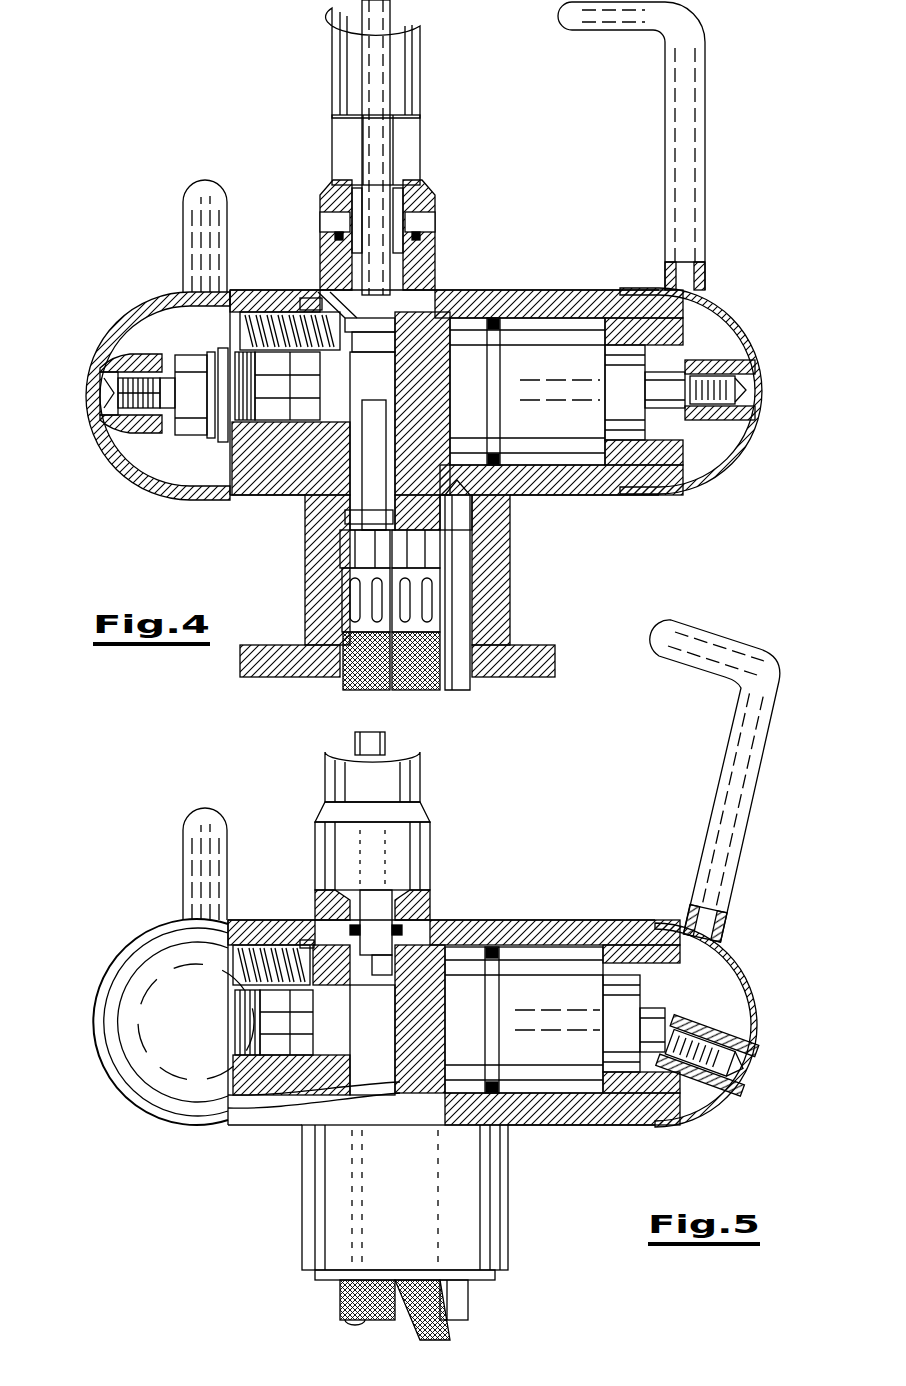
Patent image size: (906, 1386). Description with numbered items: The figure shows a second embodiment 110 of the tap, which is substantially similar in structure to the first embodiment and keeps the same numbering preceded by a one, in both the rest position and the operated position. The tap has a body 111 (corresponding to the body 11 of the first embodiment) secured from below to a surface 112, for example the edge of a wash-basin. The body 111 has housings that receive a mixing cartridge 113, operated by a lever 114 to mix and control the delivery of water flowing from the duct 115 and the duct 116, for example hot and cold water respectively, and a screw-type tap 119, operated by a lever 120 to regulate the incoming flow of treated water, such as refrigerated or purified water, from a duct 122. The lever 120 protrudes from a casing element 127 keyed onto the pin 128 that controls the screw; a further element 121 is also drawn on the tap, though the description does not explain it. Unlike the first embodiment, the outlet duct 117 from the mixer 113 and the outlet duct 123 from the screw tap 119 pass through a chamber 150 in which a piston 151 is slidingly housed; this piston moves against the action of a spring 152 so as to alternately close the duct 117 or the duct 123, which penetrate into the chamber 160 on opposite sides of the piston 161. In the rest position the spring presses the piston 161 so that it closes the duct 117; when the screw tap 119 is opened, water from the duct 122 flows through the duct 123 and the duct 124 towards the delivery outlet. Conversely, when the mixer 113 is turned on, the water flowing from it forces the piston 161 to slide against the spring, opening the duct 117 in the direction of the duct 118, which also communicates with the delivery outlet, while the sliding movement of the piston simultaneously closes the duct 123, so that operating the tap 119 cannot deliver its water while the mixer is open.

In FIG. 4, the second embodiment of the tap 110 is at (183, 109).
In FIG. 4, the body 111 is at (519, 294).
In FIG. 5, the body 11 is at (518, 920).
In FIG. 4, the surface 112 is at (527, 652).
In FIG. 4, the mixing cartridge 113 is at (564, 325).
In FIG. 5, the mixing cartridge 113 is at (562, 972).
In FIG. 4, the lever 114 is at (697, 118).
In FIG. 5, the lever 114 is at (729, 644).
In FIG. 4, the duct 115 is at (428, 668).
In FIG. 5, the duct 115 is at (450, 1318).
In FIG. 5, the duct 116 is at (395, 1318).
In FIG. 4, the outlet duct 117 is at (450, 294).
In FIG. 4, the duct 118 is at (376, 143).
In FIG. 4, the screw-type tap 119 is at (185, 439).
In FIG. 4, the lever 120 is at (190, 190).
In FIG. 5, the lever 120 is at (205, 816).
In FIG. 4, the fitting 121 is at (713, 358).
In FIG. 5, the fitting 121 is at (716, 1022).
In FIG. 4, the duct 122 is at (345, 680).
In FIG. 5, the duct 122 is at (340, 1297).
In FIG. 4, the outlet duct 123 is at (328, 288).
In FIG. 5, the outlet duct 123 is at (330, 927).
In FIG. 4, the duct 124 is at (396, 62).
In FIG. 4, the casing element 127 is at (110, 328).
In FIG. 5, the casing element 127 is at (100, 987).
In FIG. 4, the pin 128 is at (166, 387).
In FIG. 4, the chamber 150 is at (744, 447).
In FIG. 5, the chamber 150 is at (752, 1013).
In FIG. 5, the piston 151 is at (318, 921).
In FIG. 4, the spring 152 is at (312, 352).
In FIG. 5, the spring 152 is at (272, 942).
In FIG. 4, the chamber 160 is at (280, 290).
In FIG. 4, the piston 161 is at (314, 290).